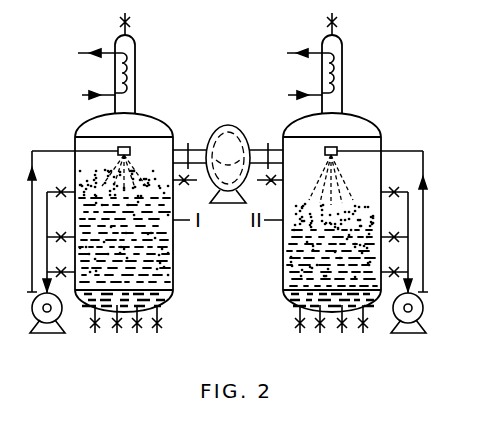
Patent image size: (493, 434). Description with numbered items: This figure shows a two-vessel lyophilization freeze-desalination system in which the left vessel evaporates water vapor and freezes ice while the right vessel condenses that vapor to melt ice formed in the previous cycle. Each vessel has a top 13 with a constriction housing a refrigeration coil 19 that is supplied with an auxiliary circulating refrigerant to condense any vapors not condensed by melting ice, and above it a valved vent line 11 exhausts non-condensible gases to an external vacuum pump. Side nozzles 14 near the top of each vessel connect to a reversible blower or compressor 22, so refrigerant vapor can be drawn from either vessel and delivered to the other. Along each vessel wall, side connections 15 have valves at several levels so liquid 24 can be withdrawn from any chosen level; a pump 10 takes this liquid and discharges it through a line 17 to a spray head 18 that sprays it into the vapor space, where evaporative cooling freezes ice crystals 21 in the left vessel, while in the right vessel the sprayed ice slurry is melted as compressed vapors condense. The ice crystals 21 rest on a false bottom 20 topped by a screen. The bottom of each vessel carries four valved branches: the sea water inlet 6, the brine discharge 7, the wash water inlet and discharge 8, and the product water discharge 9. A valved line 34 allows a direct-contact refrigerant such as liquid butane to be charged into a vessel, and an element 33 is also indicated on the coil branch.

The sea water inlet 6 is at (195, 333).
The brine discharge 7 is at (218, 333).
The wash water inlet and discharge 8 is at (238, 333).
The product water discharge 9 is at (259, 333).
The pump 10 is at (228, 313).
The valved vent line 11 is at (335, 20).
The top 13 is at (353, 113).
The side nozzle 14 is at (228, 143).
The side connection 15 is at (227, 226).
The discharge line 17 is at (231, 221).
The spray head 18 is at (227, 172).
The refrigeration coil 19 is at (187, 71).
The false bottom 20 is at (298, 307).
The ice crystals 21 is at (283, 238).
The blower or compressor 22 is at (228, 176).
The liquid 24 is at (315, 280).
The condenser coil 33 is at (346, 64).
The valved line 34 is at (228, 191).